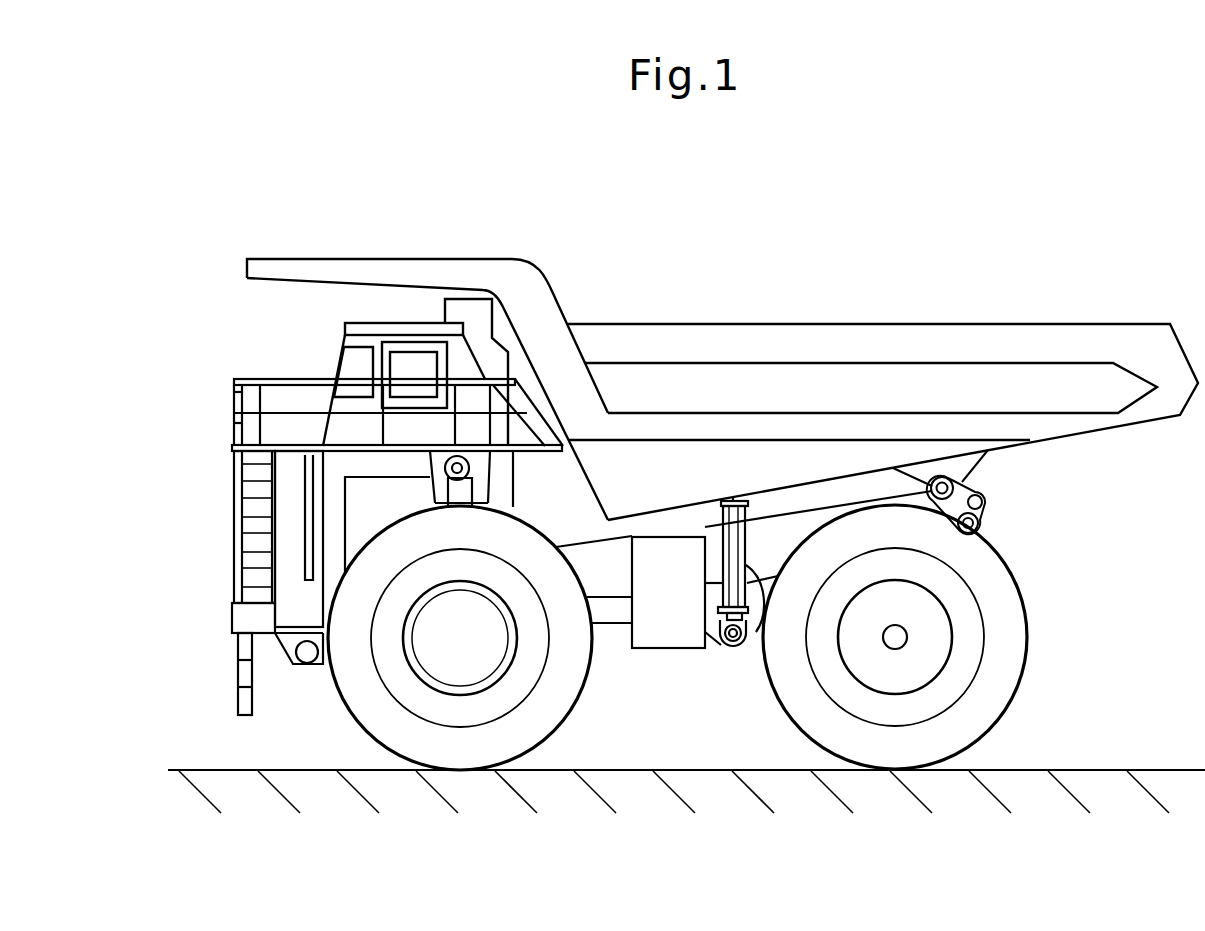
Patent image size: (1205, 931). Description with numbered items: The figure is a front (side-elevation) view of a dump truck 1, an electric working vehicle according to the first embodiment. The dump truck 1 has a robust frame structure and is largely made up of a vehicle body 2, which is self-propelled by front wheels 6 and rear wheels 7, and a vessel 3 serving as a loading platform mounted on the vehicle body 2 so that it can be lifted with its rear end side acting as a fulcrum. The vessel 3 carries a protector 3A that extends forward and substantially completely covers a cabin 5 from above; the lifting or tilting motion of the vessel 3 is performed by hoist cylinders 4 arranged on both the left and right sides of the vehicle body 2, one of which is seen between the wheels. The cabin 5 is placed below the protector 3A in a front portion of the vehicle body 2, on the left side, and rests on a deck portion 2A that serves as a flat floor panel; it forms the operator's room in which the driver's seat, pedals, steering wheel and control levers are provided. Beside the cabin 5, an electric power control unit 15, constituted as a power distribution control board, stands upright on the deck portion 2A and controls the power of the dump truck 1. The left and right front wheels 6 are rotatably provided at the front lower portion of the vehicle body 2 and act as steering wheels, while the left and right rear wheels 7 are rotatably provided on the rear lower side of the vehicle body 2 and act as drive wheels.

The dump truck 1 is at (744, 290).
The vehicle body 2 is at (610, 580).
The deck portion 2A is at (290, 440).
The vessel 3 is at (915, 340).
The protector 3A is at (340, 272).
The hoist cylinder 4 is at (758, 613).
The cabin 5 is at (363, 343).
The front wheel 6 is at (358, 702).
The rear wheel 7 is at (995, 692).
The electric power control unit 15 is at (470, 313).